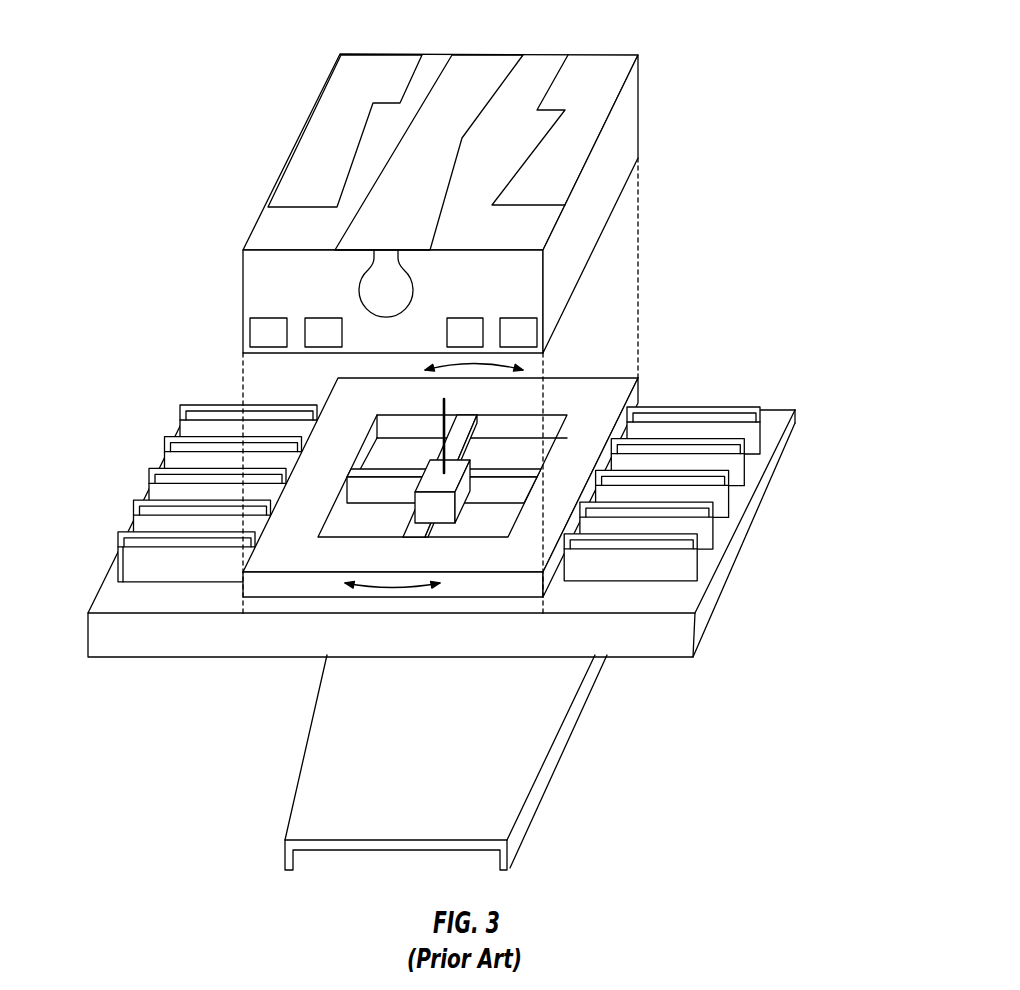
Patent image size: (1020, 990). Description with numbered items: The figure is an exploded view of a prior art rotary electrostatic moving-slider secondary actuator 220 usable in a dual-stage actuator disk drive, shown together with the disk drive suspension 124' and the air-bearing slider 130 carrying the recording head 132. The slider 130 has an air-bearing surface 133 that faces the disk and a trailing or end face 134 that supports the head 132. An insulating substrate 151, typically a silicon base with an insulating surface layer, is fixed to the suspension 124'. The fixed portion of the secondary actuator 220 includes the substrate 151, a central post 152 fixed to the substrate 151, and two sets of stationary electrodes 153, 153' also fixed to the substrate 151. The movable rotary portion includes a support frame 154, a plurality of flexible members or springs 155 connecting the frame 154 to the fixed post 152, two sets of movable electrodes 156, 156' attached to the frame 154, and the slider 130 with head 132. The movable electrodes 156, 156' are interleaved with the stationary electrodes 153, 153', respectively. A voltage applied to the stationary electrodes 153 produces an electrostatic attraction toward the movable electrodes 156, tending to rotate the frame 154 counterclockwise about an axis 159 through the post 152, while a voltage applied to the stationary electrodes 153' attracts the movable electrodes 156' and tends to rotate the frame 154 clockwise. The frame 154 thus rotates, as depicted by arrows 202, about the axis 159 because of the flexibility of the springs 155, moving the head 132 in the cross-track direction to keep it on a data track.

The air-bearing slider 130 is at (630, 110).
The air-bearing surface 133 is at (470, 75).
The trailing or end face 134 is at (263, 277).
The recording head 132 is at (400, 290).
The arrows 202 is at (475, 362).
The axis 159 is at (442, 432).
The flexible members or springs 155 is at (470, 467).
The central post 152 is at (615, 388).
The support frame 154 is at (615, 380).
The movable electrodes 156 is at (142, 489).
The stationary electrodes 153 is at (191, 485).
The movable electrodes 156' is at (713, 485).
The stationary electrodes 153' is at (703, 501).
The secondary actuator 220 is at (788, 394).
The insulating substrate 151 is at (108, 645).
The disk drive suspension 124' is at (446, 762).